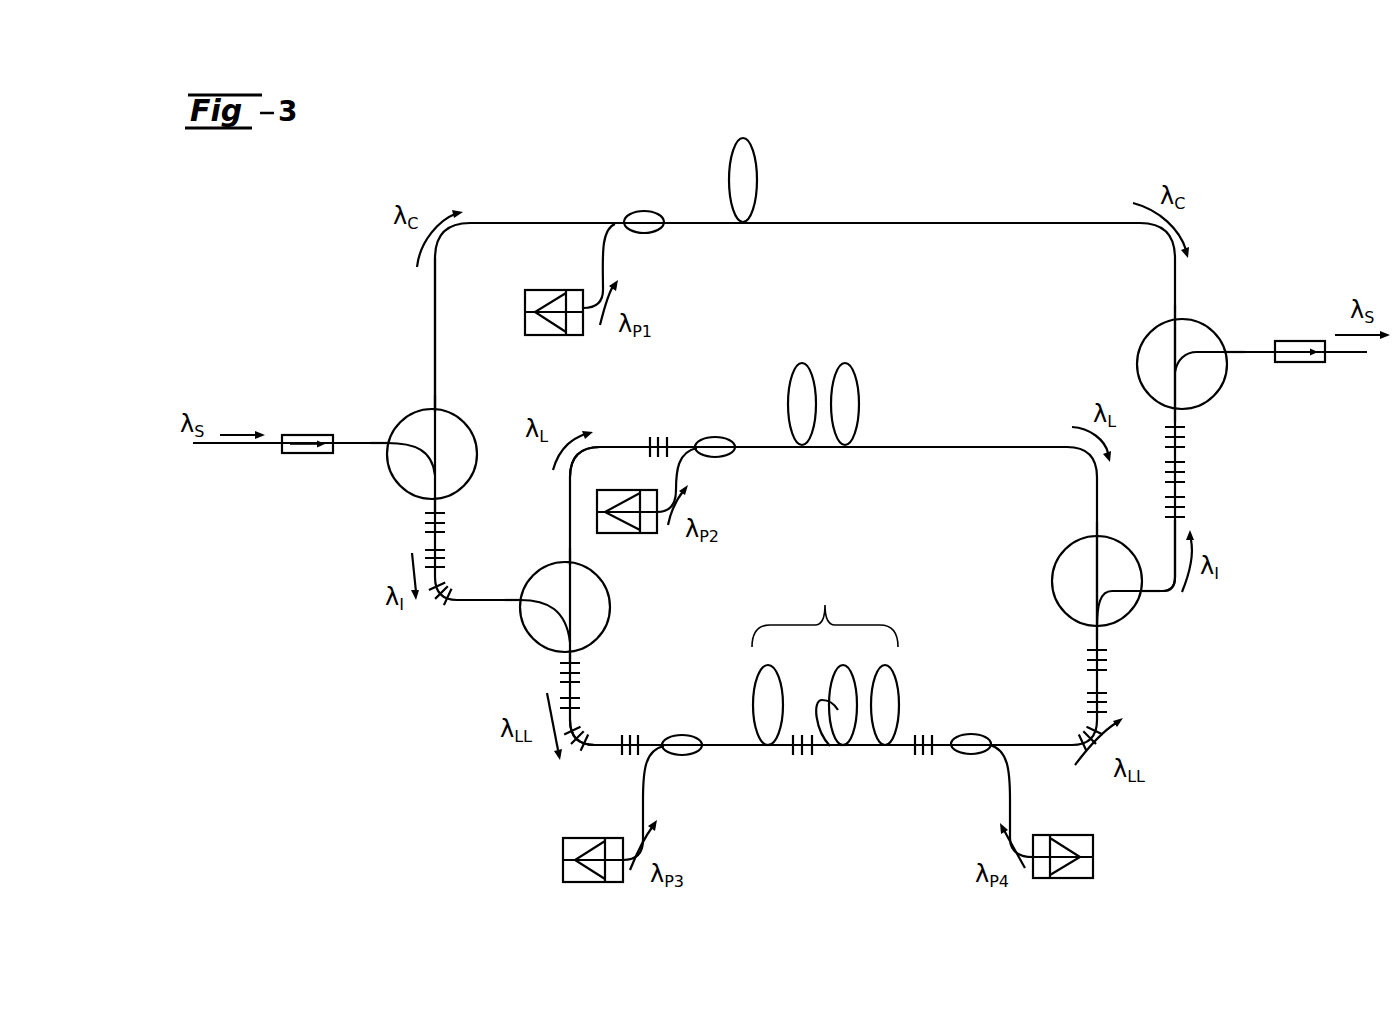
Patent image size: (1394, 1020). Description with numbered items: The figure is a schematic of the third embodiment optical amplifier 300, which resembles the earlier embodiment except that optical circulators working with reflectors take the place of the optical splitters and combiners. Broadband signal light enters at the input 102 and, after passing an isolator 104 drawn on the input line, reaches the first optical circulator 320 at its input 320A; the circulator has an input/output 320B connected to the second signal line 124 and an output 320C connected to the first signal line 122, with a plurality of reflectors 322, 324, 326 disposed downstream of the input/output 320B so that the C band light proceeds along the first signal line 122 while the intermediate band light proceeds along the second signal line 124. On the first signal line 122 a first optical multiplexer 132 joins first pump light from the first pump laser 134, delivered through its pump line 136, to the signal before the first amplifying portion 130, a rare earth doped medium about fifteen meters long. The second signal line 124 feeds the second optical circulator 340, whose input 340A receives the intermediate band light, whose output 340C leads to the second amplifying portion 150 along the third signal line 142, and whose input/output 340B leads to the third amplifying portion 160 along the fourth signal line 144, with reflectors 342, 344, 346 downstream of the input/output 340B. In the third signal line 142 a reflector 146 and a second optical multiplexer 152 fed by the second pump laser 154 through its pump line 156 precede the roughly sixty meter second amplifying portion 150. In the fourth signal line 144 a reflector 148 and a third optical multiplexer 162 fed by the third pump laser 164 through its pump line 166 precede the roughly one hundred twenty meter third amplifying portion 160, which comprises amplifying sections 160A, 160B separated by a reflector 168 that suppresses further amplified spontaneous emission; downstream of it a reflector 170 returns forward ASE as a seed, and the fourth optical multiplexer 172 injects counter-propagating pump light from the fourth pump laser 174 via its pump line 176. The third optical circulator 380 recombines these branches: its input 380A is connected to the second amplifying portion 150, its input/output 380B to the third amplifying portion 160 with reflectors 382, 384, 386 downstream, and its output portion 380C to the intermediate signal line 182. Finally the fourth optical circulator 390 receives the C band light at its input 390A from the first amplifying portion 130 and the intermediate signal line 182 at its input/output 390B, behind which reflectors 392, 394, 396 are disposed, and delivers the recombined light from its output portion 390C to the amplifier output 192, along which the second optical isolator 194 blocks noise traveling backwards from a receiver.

The optical amplifier 300 is at (522, 173).
The input 102 is at (238, 450).
The input isolator 104 is at (307, 457).
The first signal line 122 is at (430, 291).
The second signal line 124 is at (497, 602).
The first amplifying portion 130 is at (743, 138).
The first optical multiplexer 132 is at (644, 210).
The first pump laser 134 is at (548, 290).
The pump line 136 is at (605, 256).
The third signal line 142 is at (607, 446).
The fourth signal line 144 is at (604, 750).
The reflector 146 is at (668, 440).
The reflector 148 is at (640, 737).
The second amplifying portion 150 is at (802, 364).
The second optical multiplexer 152 is at (720, 437).
The second pump laser 154 is at (625, 482).
The pump line 156 is at (677, 469).
The third amplifying portion 160 is at (825, 605).
The amplifying section 160A is at (753, 700).
The amplifying section 160B is at (838, 752).
The third optical multiplexer 162 is at (683, 757).
The third pump laser 164 is at (563, 861).
The pump line 166 is at (641, 808).
The reflector 168 is at (800, 752).
The reflector 170 is at (925, 750).
The fourth optical multiplexer 172 is at (972, 733).
The fourth pump laser 174 is at (1067, 835).
The pump line 176 is at (1010, 800).
The intermediate signal line 182 is at (1165, 592).
The amplifier output 192 is at (1250, 343).
The second optical isolator 194 is at (1300, 342).
The first optical circulator 320 is at (412, 416).
The input 320A is at (388, 441).
The input/output 320B is at (432, 498).
The output 320C is at (437, 411).
The reflector 322 is at (444, 516).
The reflector 324 is at (445, 556).
The reflector 326 is at (448, 607).
The second optical circulator 340 is at (612, 605).
The input 340A is at (510, 598).
The input/output 340B is at (563, 655).
The output 340C is at (583, 565).
The reflector 342 is at (578, 668).
The reflector 344 is at (585, 708).
The reflector 346 is at (575, 758).
The third optical circulator 380 is at (1060, 556).
The input 380A is at (1100, 537).
The input/output 380B is at (1097, 627).
The output portion 380C is at (1140, 592).
The reflector 382 is at (1103, 670).
The reflector 384 is at (1090, 693).
The reflector 386 is at (1080, 733).
The fourth optical circulator 390 is at (1205, 332).
The input 390A is at (1175, 322).
The input/output 390B is at (1170, 408).
The output portion 390C is at (1230, 355).
The reflector 392 is at (1186, 437).
The reflector 394 is at (1186, 473).
The reflector 396 is at (1186, 507).